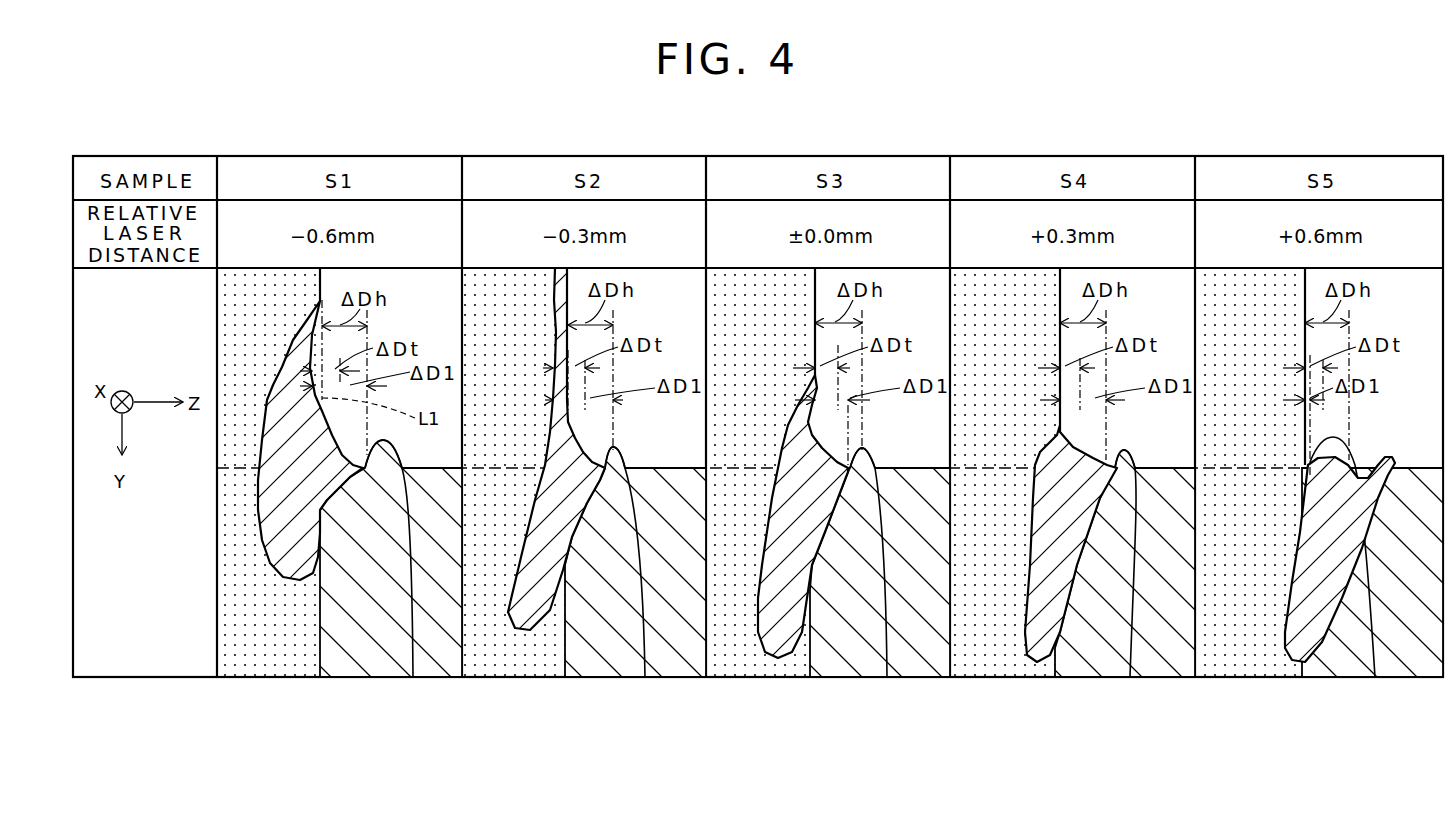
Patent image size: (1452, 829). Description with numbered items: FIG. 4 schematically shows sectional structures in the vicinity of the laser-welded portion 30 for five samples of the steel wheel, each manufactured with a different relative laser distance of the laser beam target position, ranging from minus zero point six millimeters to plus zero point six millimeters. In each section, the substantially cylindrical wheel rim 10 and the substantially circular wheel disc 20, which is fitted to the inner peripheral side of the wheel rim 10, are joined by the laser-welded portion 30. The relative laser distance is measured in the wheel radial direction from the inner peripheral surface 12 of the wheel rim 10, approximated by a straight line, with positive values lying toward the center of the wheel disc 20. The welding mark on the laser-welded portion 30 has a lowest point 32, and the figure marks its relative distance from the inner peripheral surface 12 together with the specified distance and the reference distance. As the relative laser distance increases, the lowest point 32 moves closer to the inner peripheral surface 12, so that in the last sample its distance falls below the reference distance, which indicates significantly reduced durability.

The wheel rim 10 is at (246, 648).
The inner peripheral surface 12 is at (322, 276).
The wheel disc 20 is at (357, 660).
The laser-welded portion 30 is at (297, 583).
The lowest point 32 is at (413, 677).